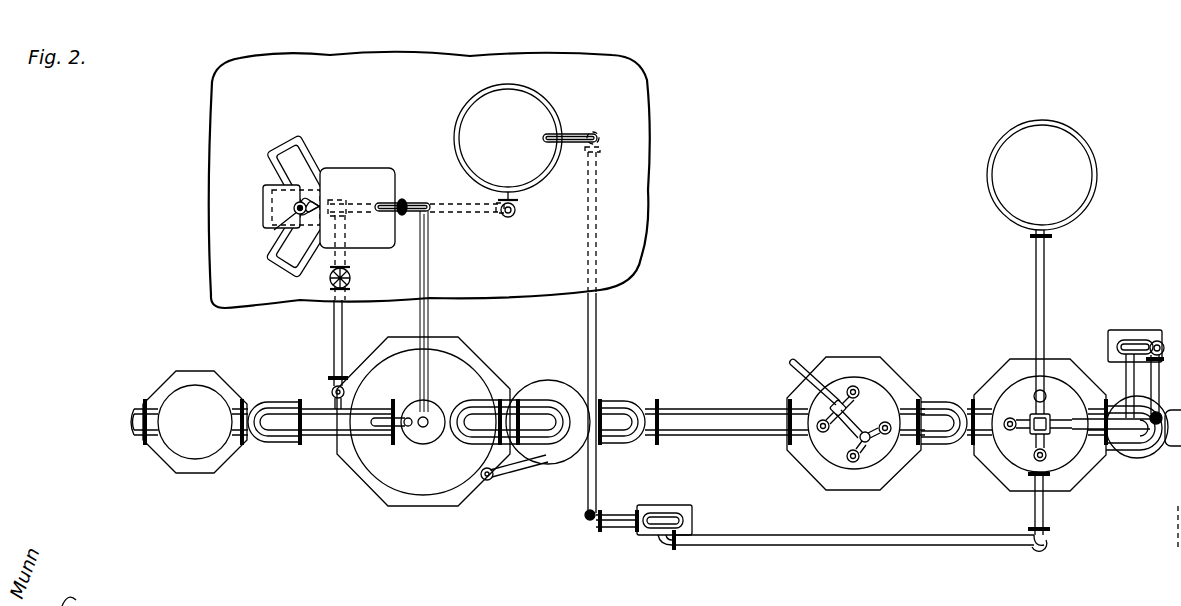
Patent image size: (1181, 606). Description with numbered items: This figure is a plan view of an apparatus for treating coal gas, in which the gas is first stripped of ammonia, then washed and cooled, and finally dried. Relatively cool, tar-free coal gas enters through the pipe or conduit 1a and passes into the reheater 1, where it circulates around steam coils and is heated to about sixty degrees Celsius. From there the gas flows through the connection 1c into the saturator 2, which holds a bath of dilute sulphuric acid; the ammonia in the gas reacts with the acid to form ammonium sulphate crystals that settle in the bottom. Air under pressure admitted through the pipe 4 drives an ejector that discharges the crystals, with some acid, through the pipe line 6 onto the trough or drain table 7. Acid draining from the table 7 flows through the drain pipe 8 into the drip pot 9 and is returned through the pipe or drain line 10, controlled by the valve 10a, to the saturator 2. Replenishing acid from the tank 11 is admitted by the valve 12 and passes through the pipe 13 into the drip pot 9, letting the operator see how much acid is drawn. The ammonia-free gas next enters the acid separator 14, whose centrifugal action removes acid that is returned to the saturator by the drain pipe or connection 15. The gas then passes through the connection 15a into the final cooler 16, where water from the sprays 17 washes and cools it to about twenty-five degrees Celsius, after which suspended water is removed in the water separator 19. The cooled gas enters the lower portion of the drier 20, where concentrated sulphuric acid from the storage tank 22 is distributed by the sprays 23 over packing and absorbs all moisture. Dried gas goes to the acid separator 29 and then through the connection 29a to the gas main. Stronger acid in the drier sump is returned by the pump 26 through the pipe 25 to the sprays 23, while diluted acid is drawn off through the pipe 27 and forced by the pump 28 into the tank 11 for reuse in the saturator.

The reheater 1 is at (195, 422).
The pipe or conduit 1a is at (134, 406).
The connection 1c is at (282, 410).
The saturator 2 is at (372, 468).
The pipe 4 is at (388, 436).
The pipe line 6 is at (398, 200).
The trough or drain table 7 is at (360, 178).
The drain pipe 8 is at (272, 226).
The drip pot 9 is at (264, 204).
The pipe or drain line 10 is at (333, 350).
The valve 10a is at (352, 277).
The tank 11 is at (508, 138).
The valve 12 is at (418, 198).
The pipe 13 is at (466, 222).
The acid separator 14 is at (540, 390).
The drain pipe or connection 15 is at (490, 480).
The connection 15a is at (714, 412).
The final cooler 16 is at (818, 446).
The sprays 17 is at (860, 398).
The water separator 19 is at (946, 402).
The drier 20 is at (1026, 386).
The storage tank 22 is at (1082, 172).
The sprays 23 is at (1034, 456).
The pipe 25 is at (1108, 434).
The pump 26 is at (1122, 332).
The pipe 27 is at (578, 132).
The pump 28 is at (664, 510).
The acid separator 29 is at (1134, 452).
The connection 29a is at (1176, 486).